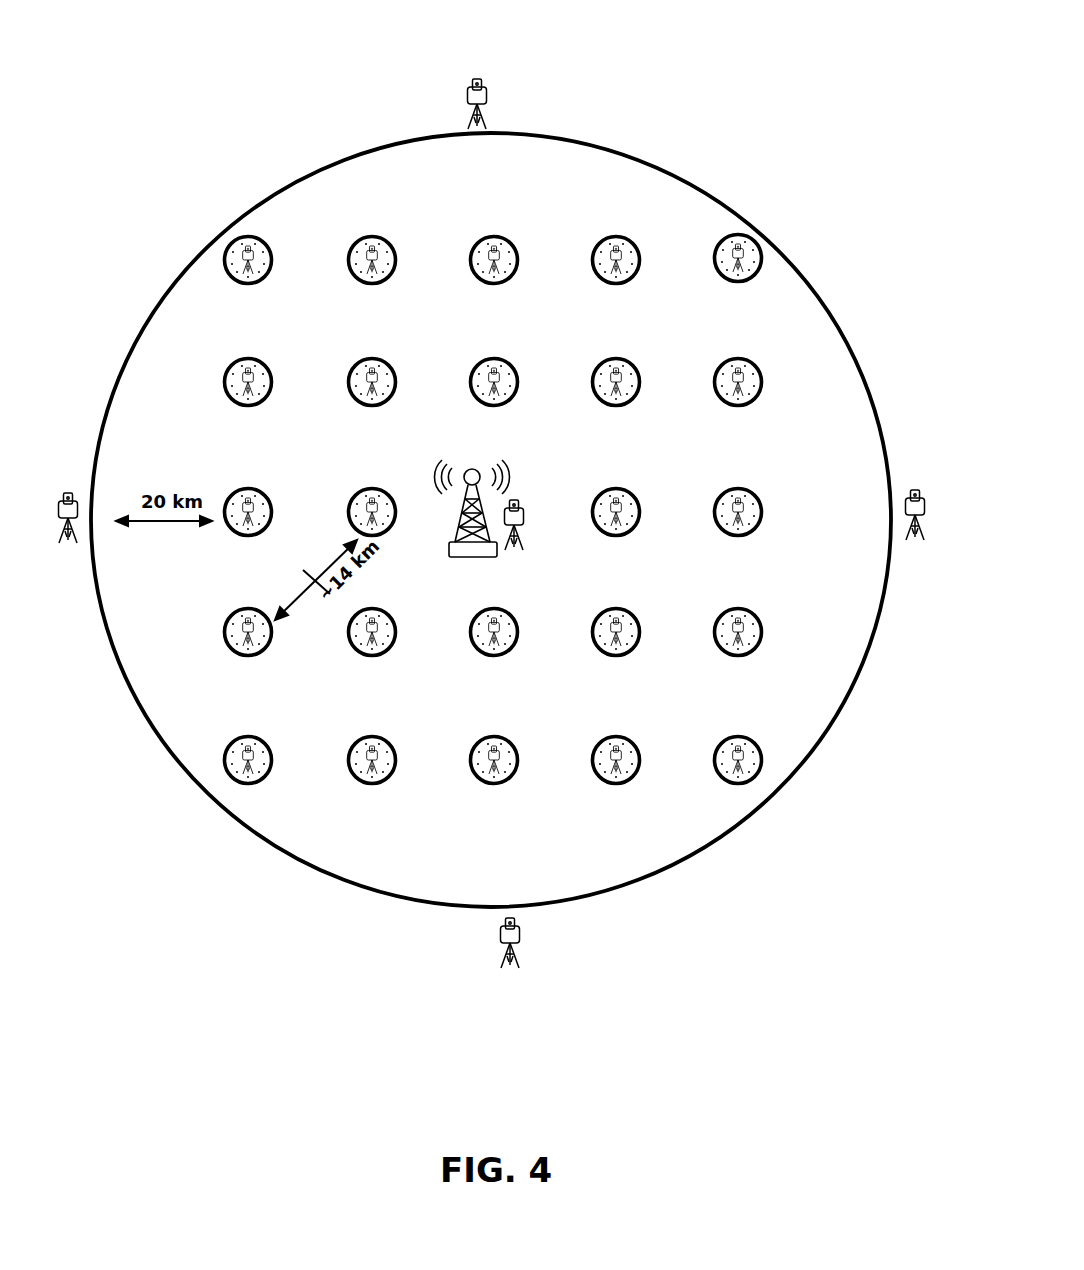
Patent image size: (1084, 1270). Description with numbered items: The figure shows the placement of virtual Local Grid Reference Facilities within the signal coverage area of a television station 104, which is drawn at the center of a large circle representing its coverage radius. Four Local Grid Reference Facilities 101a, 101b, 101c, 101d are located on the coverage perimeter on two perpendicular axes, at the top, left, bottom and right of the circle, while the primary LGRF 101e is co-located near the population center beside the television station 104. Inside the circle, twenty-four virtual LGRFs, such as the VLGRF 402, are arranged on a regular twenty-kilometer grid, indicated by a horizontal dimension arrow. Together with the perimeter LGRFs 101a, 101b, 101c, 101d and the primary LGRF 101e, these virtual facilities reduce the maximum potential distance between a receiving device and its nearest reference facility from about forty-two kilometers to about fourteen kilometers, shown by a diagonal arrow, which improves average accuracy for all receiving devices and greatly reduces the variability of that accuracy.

The Local Grid Reference Facility (LGRF) 101a is at (489, 78).
The Local Grid Reference Facility (LGRF) 101b is at (73, 485).
The Local Grid Reference Facility (LGRF) 101c is at (488, 937).
The Local Grid Reference Facility (LGRF) 101d is at (920, 485).
The primary Local Grid Reference Facility (PLGRF) 101e is at (527, 505).
The television station 104 is at (472, 462).
The virtual Local Grid Reference Facility (VLGRF) 402 is at (729, 237).